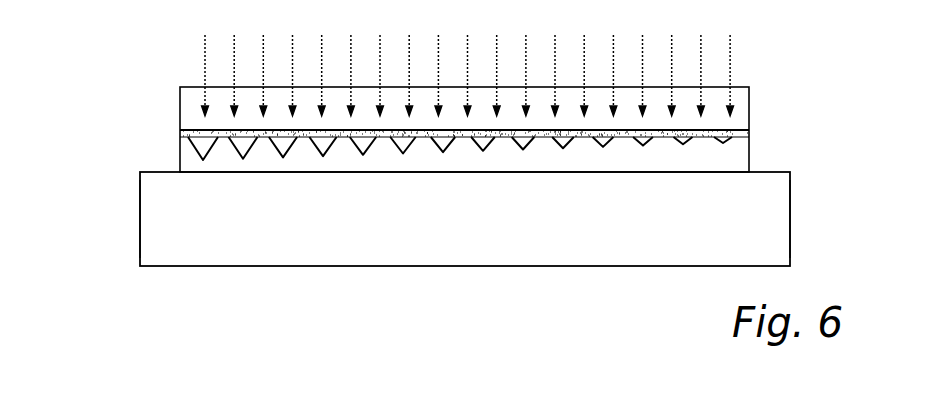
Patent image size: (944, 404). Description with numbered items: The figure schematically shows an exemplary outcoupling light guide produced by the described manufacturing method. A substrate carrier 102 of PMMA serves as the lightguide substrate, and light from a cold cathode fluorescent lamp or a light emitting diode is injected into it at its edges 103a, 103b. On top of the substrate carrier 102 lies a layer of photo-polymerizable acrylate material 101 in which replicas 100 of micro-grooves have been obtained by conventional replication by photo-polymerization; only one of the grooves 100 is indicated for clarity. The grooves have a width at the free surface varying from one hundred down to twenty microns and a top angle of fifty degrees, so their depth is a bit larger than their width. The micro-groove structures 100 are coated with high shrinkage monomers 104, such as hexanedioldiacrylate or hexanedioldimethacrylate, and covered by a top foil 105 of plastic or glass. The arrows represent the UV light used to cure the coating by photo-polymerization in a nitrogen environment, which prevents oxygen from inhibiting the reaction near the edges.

The replica of micro-groove 100 is at (201, 148).
The 2P acrylate material 101 is at (180, 160).
The substrate carrier 102 is at (678, 248).
The edge 103a is at (140, 217).
The edge 103b is at (790, 222).
The high shrinkage monomers 104 is at (180, 133).
The top foil 105 is at (744, 100).